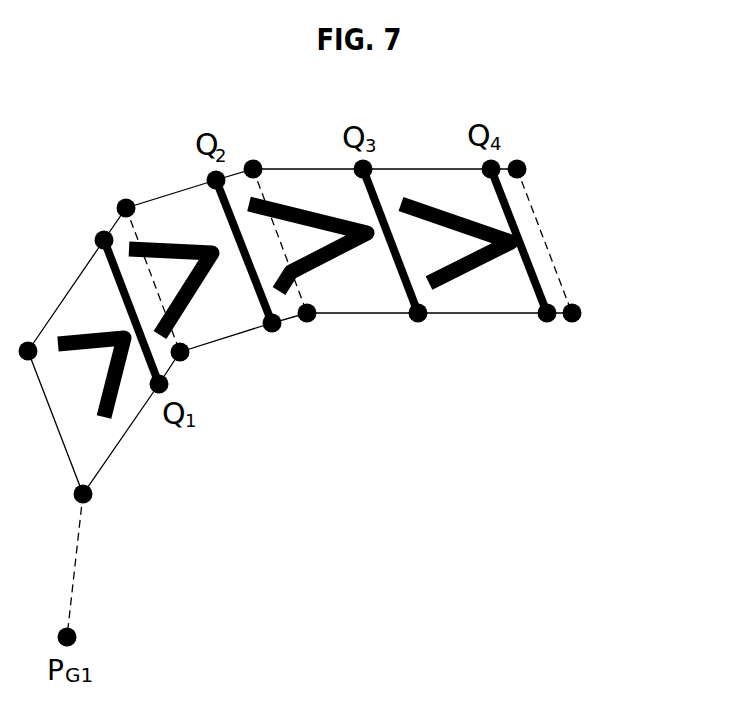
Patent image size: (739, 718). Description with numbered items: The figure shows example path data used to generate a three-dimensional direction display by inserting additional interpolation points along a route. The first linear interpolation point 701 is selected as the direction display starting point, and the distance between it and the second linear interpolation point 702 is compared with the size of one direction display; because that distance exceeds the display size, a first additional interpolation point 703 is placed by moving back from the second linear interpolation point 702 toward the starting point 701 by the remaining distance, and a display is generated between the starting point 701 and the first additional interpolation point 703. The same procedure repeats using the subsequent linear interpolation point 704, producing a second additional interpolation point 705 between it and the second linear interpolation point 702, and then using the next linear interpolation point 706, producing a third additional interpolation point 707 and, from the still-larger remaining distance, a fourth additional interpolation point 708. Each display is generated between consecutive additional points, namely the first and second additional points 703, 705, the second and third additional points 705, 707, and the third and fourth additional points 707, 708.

The linear interpolation point P_G2 701 is at (87, 503).
The linear interpolation point P_G3 702 is at (187, 349).
The additional interpolation point Q1 703 is at (167, 385).
The linear interpolation point P_G4 704 is at (318, 318).
The additional interpolation point Q2 705 is at (273, 332).
The linear interpolation point P_G5 706 is at (582, 315).
The additional interpolation point Q3 707 is at (420, 321).
The additional interpolation point Q4 708 is at (543, 323).